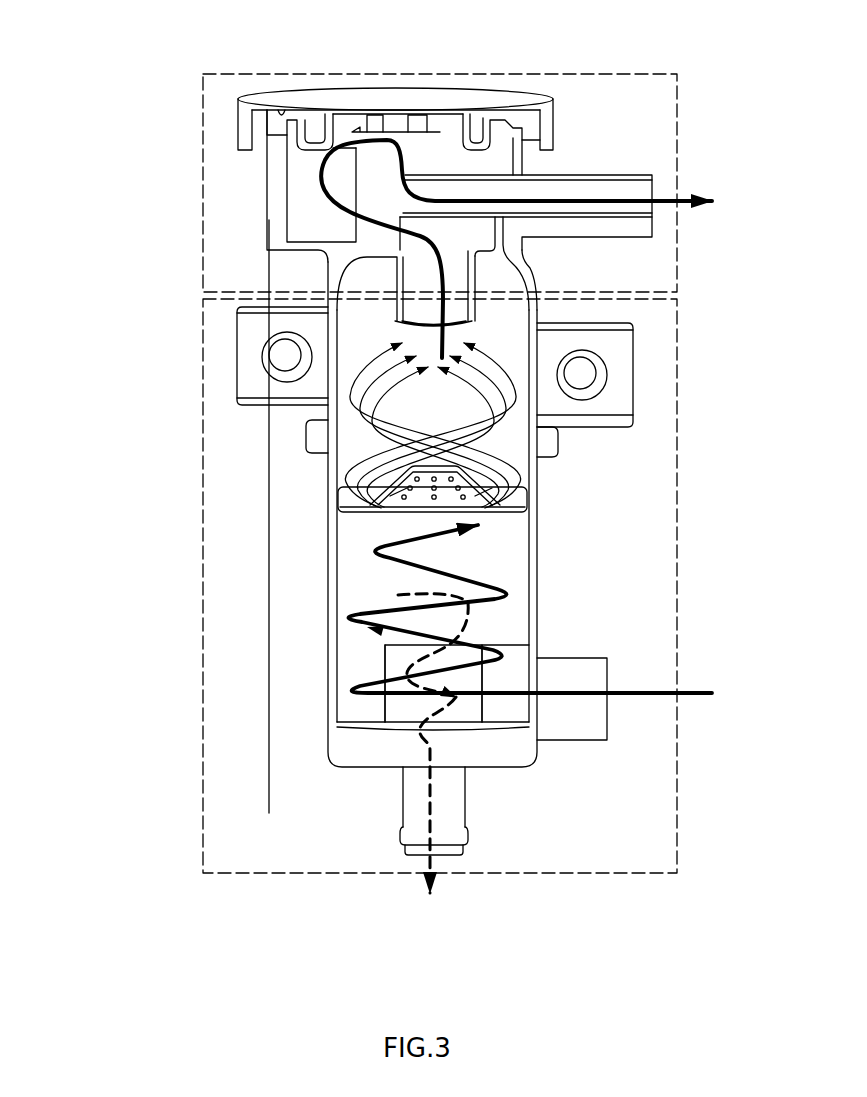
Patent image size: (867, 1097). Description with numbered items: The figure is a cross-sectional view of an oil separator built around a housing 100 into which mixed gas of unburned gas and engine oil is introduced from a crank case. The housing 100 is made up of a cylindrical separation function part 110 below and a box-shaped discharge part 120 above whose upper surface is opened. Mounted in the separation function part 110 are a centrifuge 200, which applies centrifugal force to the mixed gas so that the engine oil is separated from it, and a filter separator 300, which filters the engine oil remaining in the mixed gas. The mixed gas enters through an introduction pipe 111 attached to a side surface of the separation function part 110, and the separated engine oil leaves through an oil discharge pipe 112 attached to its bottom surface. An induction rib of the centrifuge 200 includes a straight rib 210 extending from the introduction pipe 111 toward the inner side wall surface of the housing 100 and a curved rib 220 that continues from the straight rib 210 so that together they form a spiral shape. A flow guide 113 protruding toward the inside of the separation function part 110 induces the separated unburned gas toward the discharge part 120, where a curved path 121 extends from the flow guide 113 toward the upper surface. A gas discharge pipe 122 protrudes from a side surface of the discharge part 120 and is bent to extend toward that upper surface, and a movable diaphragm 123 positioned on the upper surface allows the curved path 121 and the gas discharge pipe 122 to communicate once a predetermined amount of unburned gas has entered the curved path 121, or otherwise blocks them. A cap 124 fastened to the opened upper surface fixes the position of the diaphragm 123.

The housing 100 is at (102, 240).
The separation function part 110 is at (203, 417).
The introduction pipe 111 is at (597, 720).
The oil discharge pipe 112 is at (415, 812).
The flow guide 113 is at (458, 280).
The discharge part 120 is at (203, 240).
The curved path 121 is at (313, 222).
The gas discharge pipe 122 is at (603, 175).
The movable diaphragm 123 is at (453, 125).
The cap 124 is at (392, 98).
The centrifuge 200 is at (500, 636).
The straight rib 210 is at (505, 712).
The curved rib 220 is at (395, 708).
The filter separator 300 is at (512, 516).